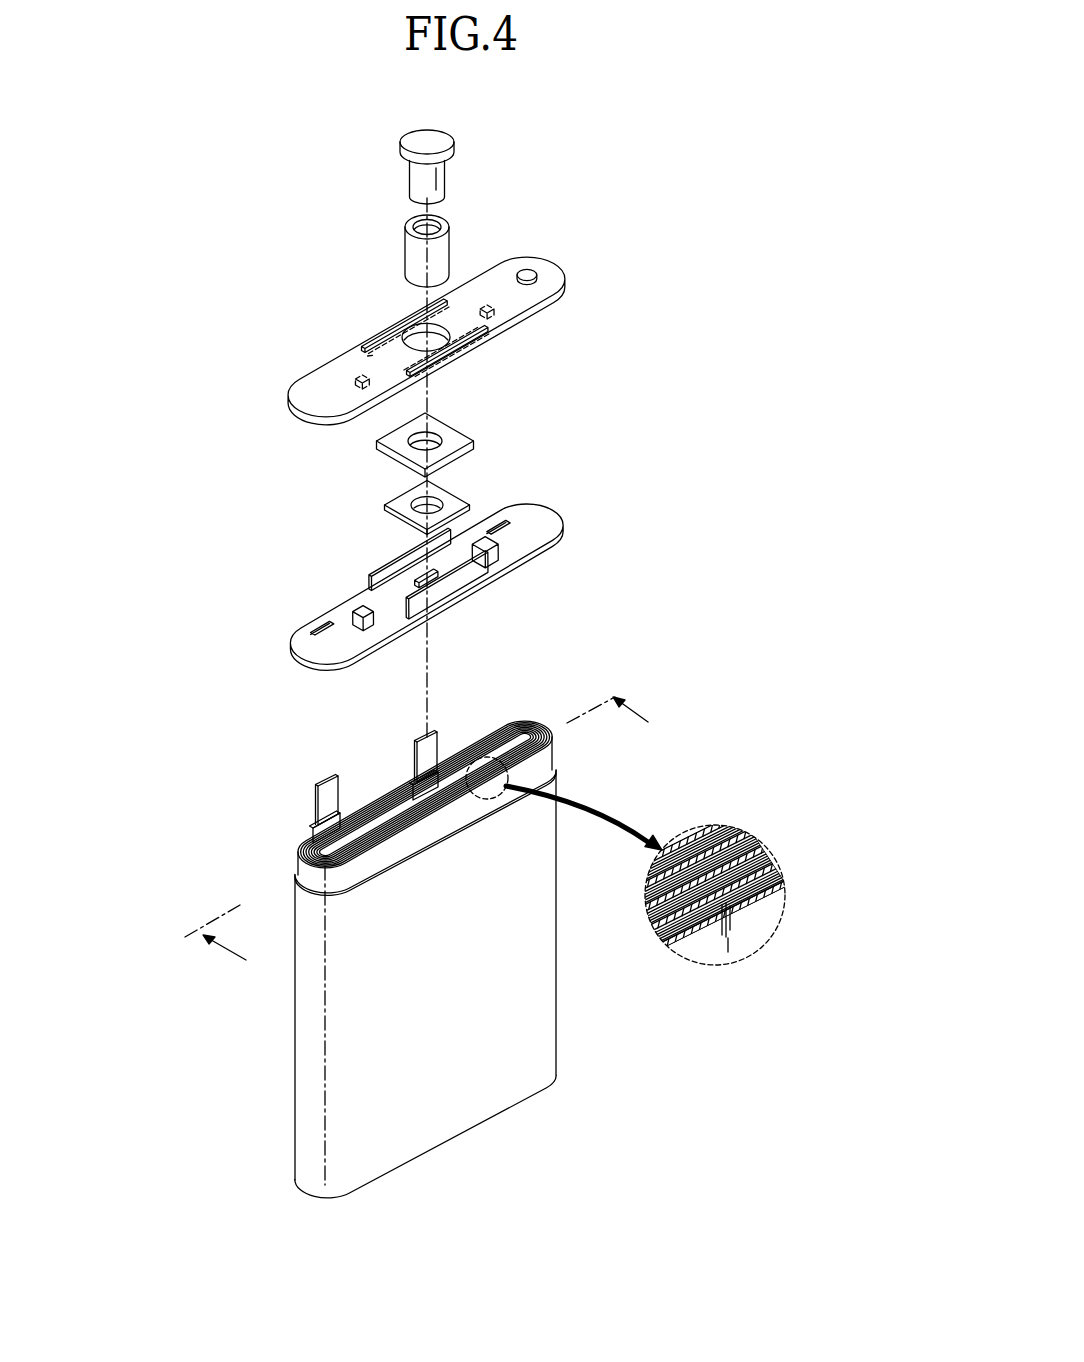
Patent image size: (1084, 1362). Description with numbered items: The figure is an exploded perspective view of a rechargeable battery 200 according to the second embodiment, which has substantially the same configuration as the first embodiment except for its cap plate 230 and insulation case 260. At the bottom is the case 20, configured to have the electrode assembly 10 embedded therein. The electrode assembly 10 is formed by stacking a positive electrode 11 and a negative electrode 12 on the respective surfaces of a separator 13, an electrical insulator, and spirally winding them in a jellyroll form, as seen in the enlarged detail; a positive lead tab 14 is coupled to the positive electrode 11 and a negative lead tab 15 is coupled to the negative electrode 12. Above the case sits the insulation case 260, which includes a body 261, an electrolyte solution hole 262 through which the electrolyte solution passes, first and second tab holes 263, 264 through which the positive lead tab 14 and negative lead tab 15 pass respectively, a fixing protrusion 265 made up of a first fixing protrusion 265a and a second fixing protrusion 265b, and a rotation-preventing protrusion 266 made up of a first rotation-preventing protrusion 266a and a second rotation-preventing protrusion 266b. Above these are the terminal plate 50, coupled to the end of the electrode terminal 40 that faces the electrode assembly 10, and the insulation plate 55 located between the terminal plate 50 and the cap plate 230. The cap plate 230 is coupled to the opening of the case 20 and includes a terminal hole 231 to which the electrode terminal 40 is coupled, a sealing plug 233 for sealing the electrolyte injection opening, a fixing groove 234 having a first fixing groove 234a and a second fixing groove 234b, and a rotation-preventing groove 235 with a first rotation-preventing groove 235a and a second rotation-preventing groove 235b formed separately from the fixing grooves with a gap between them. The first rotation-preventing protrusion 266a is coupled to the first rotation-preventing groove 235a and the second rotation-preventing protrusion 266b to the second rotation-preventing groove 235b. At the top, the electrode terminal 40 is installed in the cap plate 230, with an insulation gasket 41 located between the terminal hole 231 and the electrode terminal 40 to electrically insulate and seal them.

The electrode assembly 10 is at (531, 722).
The positive electrode 11 is at (767, 847).
The negative electrode 12 is at (762, 862).
The separator 13 is at (652, 920).
The positive lead tab 14 is at (313, 792).
The negative lead tab 15 is at (432, 752).
The case 20 is at (412, 1113).
The electrode terminal 40 is at (438, 138).
The insulation gasket 41 is at (443, 217).
The terminal plate 50 is at (445, 490).
The insulation plate 55 is at (460, 430).
The rechargeable battery 200 is at (661, 195).
The cap plate 230 is at (330, 385).
The terminal hole 231 is at (442, 332).
The sealing plug 233 is at (530, 271).
The fixing groove 234 is at (380, 268).
The first fixing groove 234a is at (368, 350).
The second fixing groove 234b is at (408, 322).
The rotation-preventing groove 235 is at (616, 320).
The first rotation-preventing groove 235a is at (423, 374).
The second rotation-preventing groove 235b is at (498, 314).
The insulation case 260 is at (572, 506).
The body 261 is at (537, 540).
The electrolyte solution hole 262 is at (493, 533).
The first tab hole 263 is at (403, 573).
The second tab hole 264 is at (318, 620).
The fixing protrusion 265 is at (473, 676).
The first fixing protrusion 265a is at (440, 600).
The second fixing protrusion 265b is at (383, 575).
The rotation-preventing protrusion 266 is at (314, 444).
The first rotation-preventing protrusion 266a is at (360, 612).
The second rotation-preventing protrusion 266b is at (482, 535).